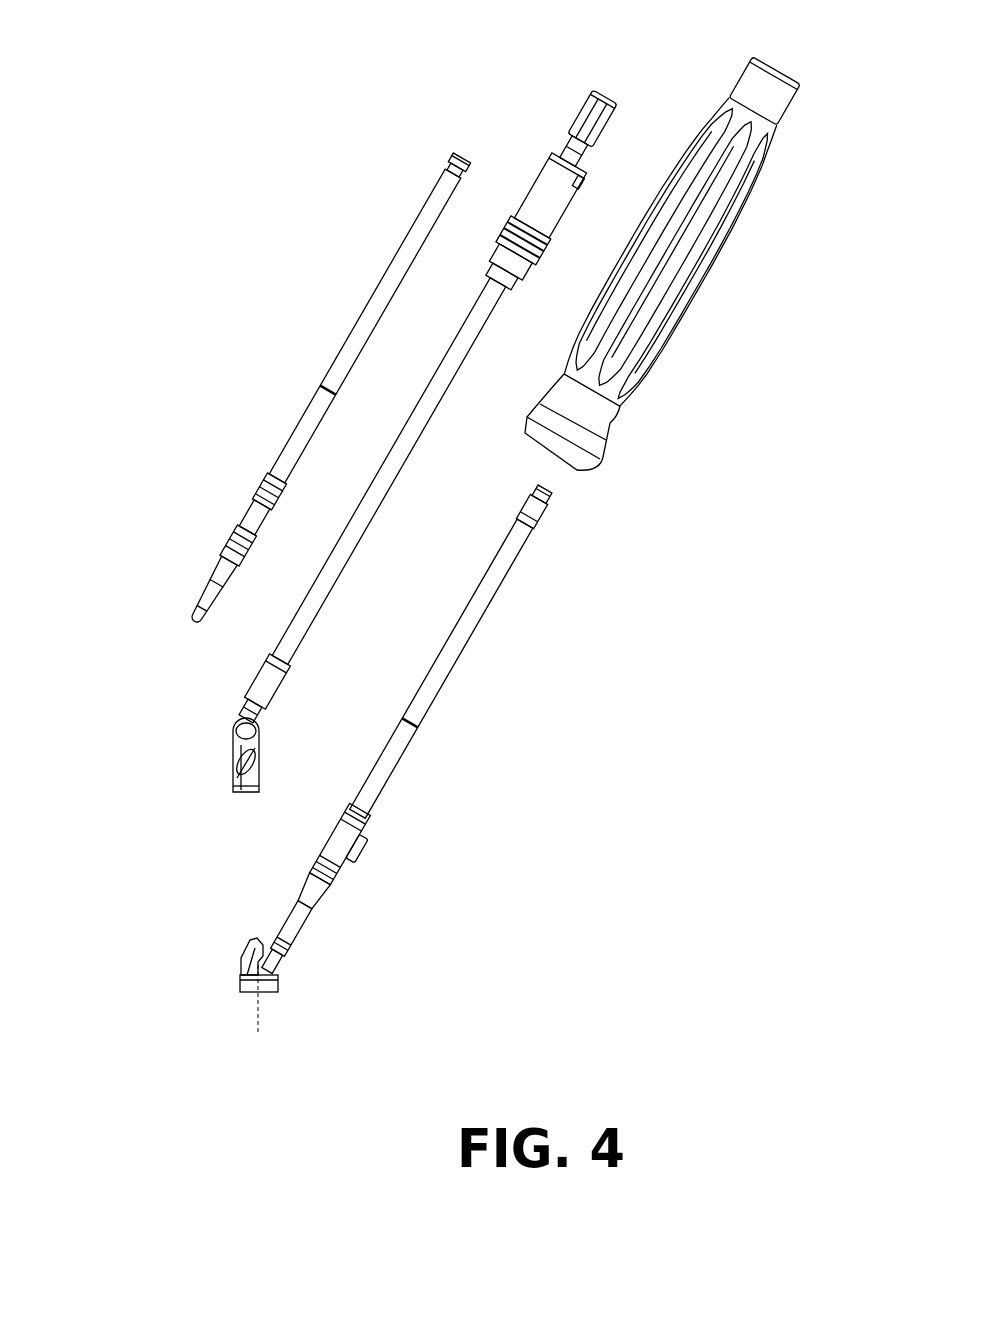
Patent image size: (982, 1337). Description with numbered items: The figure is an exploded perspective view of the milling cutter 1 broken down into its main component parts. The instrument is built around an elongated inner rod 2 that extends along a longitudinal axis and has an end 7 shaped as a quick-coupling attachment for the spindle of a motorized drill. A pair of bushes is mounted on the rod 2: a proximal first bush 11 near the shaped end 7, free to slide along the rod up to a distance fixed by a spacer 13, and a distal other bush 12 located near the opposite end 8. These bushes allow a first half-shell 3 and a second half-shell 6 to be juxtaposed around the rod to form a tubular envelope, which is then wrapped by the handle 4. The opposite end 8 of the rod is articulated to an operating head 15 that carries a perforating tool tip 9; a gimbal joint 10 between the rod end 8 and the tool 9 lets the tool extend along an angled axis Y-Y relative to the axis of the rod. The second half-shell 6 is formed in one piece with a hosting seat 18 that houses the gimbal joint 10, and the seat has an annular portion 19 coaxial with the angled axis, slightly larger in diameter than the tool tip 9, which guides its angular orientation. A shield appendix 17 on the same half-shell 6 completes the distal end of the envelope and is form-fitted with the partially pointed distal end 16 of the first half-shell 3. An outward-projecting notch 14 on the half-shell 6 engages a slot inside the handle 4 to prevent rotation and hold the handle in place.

The milling cutter 1 is at (664, 552).
The inner rod 2 is at (322, 593).
The first half-shell 3 is at (297, 442).
The handle 4 is at (628, 352).
The second half-shell 6 is at (384, 771).
The end 7 is at (580, 120).
The opposite end 8 is at (250, 702).
The perforating tool tip 9 is at (232, 757).
The gimbal joint 10 is at (218, 715).
The first bush 11 is at (513, 270).
The other bush 12 is at (267, 673).
The spacer 13 is at (542, 217).
The notch 14 is at (362, 860).
The operating head 15 is at (191, 715).
The distal end 16 is at (198, 608).
The shield appendix 17 is at (243, 956).
The hosting seat 18 is at (260, 973).
The annular portion 19 is at (280, 978).